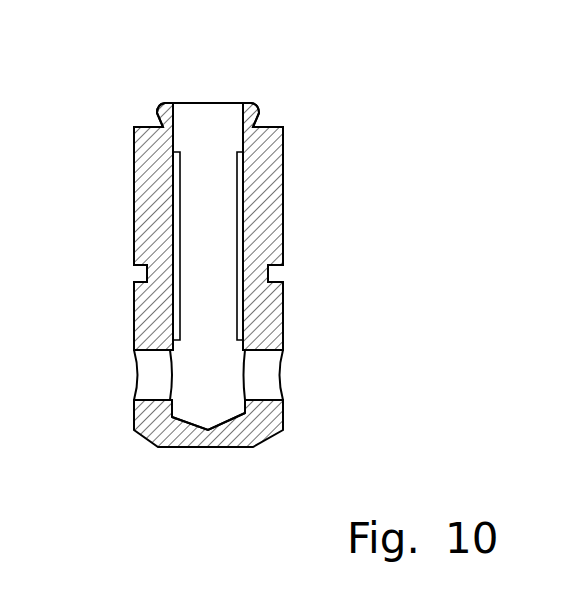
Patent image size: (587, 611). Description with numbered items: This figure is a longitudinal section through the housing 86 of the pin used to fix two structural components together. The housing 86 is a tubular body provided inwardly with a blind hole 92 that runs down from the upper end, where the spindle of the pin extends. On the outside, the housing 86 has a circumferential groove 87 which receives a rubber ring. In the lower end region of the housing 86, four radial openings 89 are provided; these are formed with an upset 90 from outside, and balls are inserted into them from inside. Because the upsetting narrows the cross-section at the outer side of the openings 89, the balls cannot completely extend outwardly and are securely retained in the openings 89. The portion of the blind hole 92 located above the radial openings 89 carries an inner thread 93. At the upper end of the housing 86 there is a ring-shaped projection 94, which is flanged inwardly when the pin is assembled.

The housing 86 is at (270, 198).
The circumferential groove 87 is at (278, 273).
The radial openings 89 is at (148, 378).
The upset 90 is at (133, 347).
The blind hole 92 is at (225, 400).
The inner thread 93 is at (178, 250).
The ring-shaped projection 94 is at (163, 112).